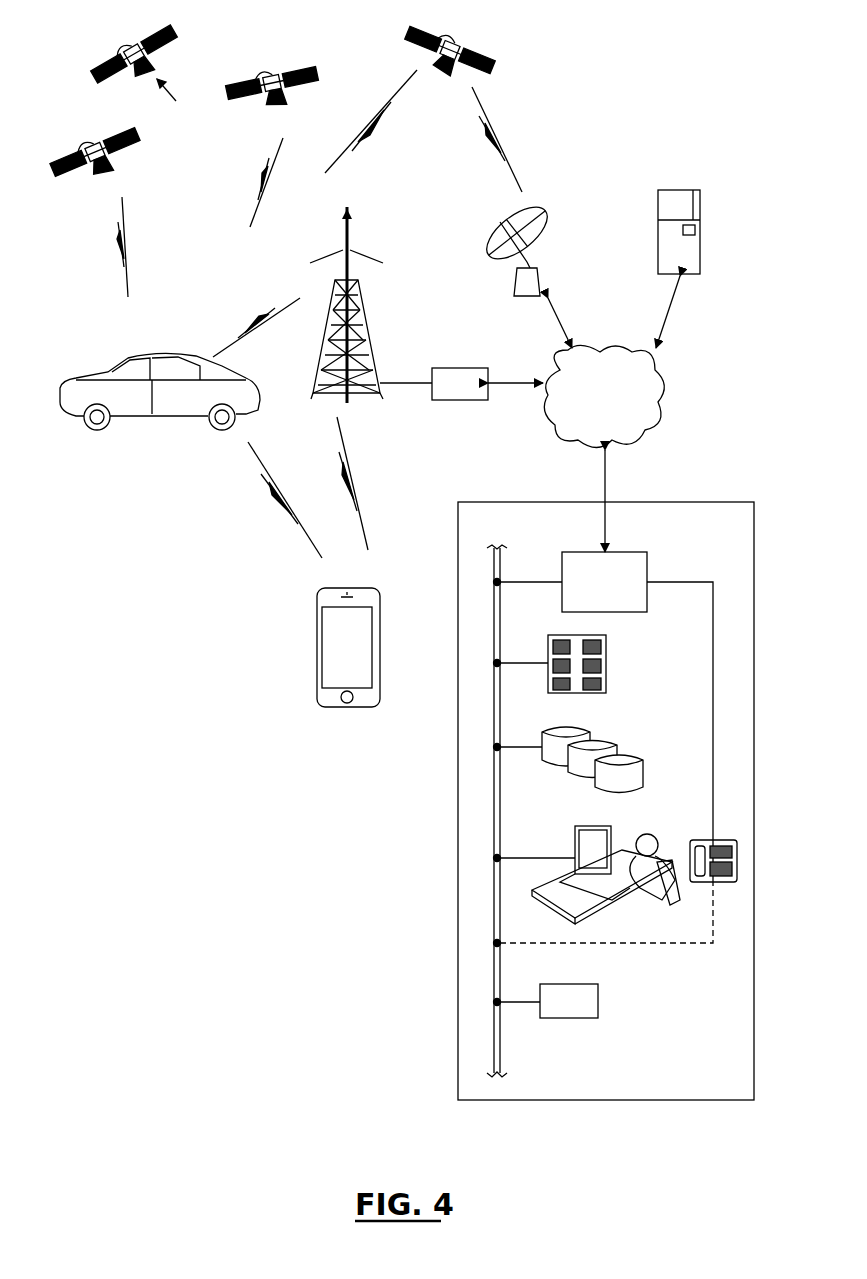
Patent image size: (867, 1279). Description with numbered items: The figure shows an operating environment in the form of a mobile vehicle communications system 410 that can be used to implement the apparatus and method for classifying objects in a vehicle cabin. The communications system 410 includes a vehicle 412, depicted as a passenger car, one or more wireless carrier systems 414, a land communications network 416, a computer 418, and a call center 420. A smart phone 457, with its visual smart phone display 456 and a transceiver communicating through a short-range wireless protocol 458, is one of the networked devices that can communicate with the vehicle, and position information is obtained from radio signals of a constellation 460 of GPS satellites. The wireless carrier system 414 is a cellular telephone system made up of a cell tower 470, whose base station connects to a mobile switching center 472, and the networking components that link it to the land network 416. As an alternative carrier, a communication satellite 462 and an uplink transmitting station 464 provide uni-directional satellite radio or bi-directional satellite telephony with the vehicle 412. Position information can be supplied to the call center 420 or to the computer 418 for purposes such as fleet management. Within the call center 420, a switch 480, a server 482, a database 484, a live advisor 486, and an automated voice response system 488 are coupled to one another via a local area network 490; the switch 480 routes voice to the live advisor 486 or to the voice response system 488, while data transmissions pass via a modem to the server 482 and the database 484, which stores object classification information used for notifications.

The mobile vehicle communications system 410 is at (629, 74).
The vehicle 412 is at (80, 377).
The wireless carrier system 414 is at (317, 406).
The land communications network 416 is at (667, 392).
The computer 418 is at (701, 231).
The call center 420 is at (576, 1100).
The mobile device 456 is at (334, 663).
The smart phone 457 is at (318, 622).
The short-range wireless protocol 458 is at (246, 458).
The constellation of GPS satellites 460 is at (299, 150).
The communication satellite 462 is at (452, 37).
The uplink transmitting station 464 is at (540, 278).
The cell tower 470 is at (367, 313).
The mobile switching center 472 is at (462, 402).
The switch 480 is at (618, 591).
The server 482 is at (607, 662).
The database 484 is at (650, 770).
The live advisor 486 is at (660, 834).
The automated voice response system 488 is at (598, 1002).
The local area network 490 is at (502, 1038).